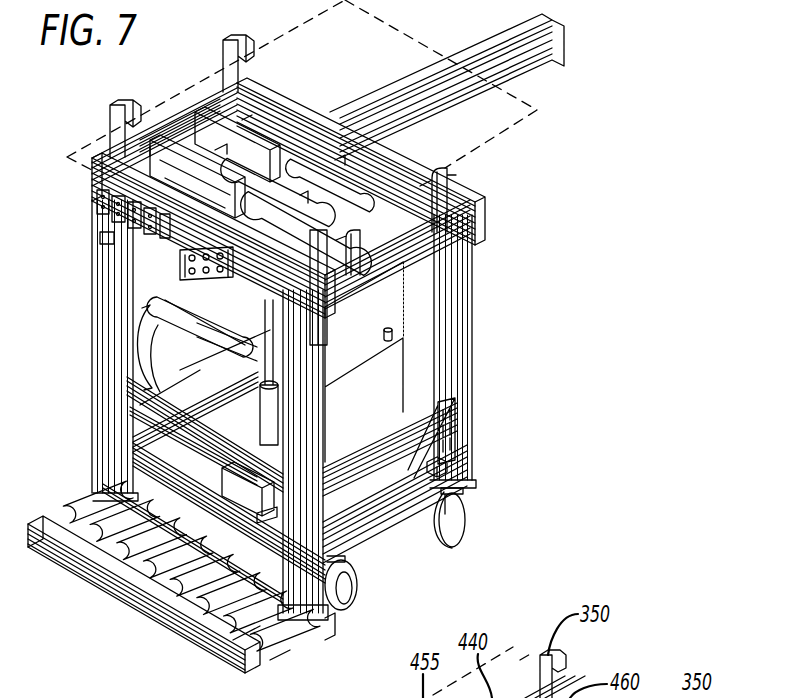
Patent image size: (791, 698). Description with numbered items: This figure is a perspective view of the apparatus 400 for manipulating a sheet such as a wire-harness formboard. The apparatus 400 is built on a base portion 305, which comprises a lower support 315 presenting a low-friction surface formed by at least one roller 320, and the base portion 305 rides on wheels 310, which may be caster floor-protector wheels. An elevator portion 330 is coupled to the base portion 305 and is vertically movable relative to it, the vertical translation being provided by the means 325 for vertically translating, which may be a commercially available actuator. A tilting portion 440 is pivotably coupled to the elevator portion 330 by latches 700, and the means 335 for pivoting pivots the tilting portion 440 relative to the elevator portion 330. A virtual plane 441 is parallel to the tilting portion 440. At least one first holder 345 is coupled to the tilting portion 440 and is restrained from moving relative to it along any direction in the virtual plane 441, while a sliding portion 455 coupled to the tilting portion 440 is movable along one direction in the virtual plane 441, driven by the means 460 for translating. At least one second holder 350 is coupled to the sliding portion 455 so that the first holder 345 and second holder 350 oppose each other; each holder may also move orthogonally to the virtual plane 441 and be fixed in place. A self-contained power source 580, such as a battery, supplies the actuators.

The base portion 305 is at (100, 326).
The wheels 310 is at (338, 604).
The lower support 315 is at (262, 662).
The roller 320 is at (235, 604).
The means for vertically translating 325 is at (268, 461).
The elevator portion 330 is at (125, 378).
The means for pivoting 335 is at (207, 327).
The first holder 345 is at (423, 170).
The second holder 350 is at (240, 47).
The apparatus 400 is at (81, 603).
The tilting portion 440 is at (113, 173).
The virtual plane 441 is at (522, 102).
The sliding portion 455 is at (143, 147).
The means for translating 460 is at (227, 127).
The self-contained power source 580 is at (380, 400).
The latches 700 is at (147, 243).